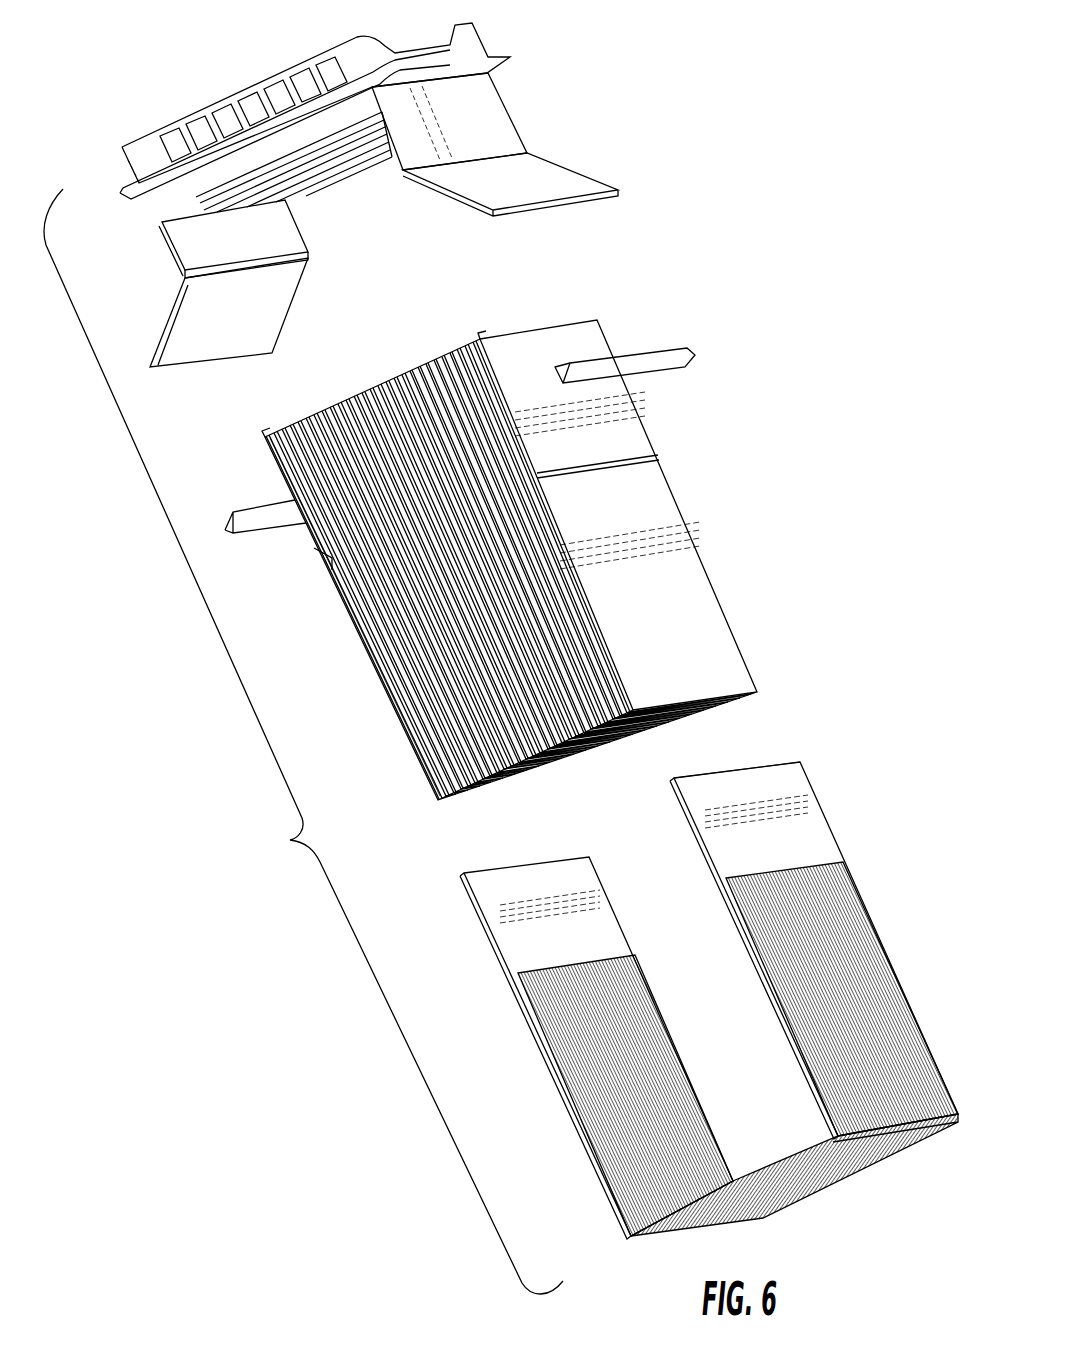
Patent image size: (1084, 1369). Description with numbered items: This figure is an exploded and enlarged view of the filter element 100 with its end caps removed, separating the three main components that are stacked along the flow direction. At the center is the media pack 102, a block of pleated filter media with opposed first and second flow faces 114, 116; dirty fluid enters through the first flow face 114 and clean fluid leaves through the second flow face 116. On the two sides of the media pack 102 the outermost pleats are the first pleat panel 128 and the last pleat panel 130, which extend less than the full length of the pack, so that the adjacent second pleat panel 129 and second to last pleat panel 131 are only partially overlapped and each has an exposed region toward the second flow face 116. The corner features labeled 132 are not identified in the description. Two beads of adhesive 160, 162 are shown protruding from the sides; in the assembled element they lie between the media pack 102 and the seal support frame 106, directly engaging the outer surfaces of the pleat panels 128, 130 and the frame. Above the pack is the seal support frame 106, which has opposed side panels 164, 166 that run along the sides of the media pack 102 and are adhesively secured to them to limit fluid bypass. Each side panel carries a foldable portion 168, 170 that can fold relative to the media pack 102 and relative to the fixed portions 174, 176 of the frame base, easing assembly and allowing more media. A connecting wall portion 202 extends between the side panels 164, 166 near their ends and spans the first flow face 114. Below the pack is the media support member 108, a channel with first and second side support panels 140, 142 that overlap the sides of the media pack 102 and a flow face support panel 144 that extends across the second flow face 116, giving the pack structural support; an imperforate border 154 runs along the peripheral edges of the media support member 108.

The filter element 100 is at (290, 840).
The media pack 102 is at (496, 546).
The seal support frame 106 is at (516, 130).
The media support member 108 is at (698, 978).
The first flow face 114 is at (375, 383).
The second flow face 116 is at (550, 782).
The first pleat panel 128 is at (313, 548).
The second pleat panel 129 is at (373, 670).
The last pleat panel 130 is at (620, 398).
The second to last pleat panel 131 is at (658, 482).
The corner tabs 132 is at (265, 432).
The first side support panel 140 is at (475, 899).
The second side support panel 142 is at (816, 834).
The flow face support panel 144 is at (867, 1171).
The imperforate border 154 is at (729, 785).
The bead of adhesive 160 is at (228, 528).
The bead of adhesive 162 is at (675, 348).
The side panel 164 is at (168, 250).
The side panel 166 is at (507, 128).
The foldable portion 168 is at (160, 343).
The foldable portion 170 is at (580, 180).
The fixed portion 174 is at (167, 237).
The fixed portion 176 is at (492, 118).
The connecting wall portion 202 is at (147, 192).